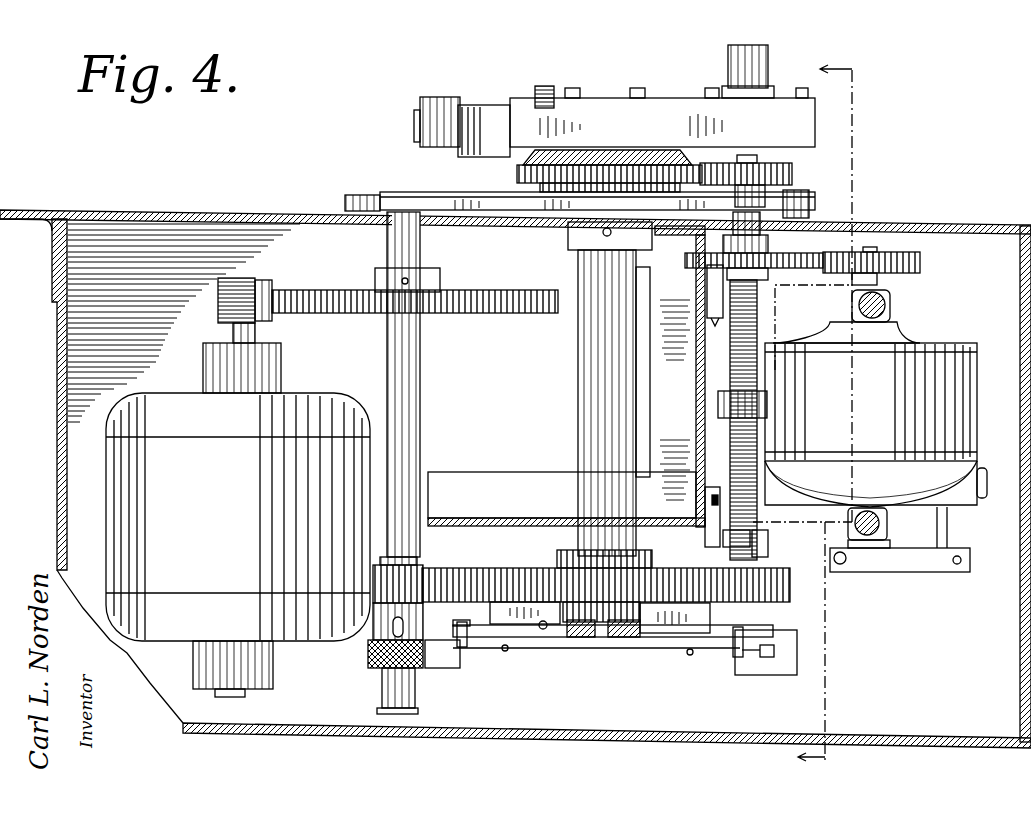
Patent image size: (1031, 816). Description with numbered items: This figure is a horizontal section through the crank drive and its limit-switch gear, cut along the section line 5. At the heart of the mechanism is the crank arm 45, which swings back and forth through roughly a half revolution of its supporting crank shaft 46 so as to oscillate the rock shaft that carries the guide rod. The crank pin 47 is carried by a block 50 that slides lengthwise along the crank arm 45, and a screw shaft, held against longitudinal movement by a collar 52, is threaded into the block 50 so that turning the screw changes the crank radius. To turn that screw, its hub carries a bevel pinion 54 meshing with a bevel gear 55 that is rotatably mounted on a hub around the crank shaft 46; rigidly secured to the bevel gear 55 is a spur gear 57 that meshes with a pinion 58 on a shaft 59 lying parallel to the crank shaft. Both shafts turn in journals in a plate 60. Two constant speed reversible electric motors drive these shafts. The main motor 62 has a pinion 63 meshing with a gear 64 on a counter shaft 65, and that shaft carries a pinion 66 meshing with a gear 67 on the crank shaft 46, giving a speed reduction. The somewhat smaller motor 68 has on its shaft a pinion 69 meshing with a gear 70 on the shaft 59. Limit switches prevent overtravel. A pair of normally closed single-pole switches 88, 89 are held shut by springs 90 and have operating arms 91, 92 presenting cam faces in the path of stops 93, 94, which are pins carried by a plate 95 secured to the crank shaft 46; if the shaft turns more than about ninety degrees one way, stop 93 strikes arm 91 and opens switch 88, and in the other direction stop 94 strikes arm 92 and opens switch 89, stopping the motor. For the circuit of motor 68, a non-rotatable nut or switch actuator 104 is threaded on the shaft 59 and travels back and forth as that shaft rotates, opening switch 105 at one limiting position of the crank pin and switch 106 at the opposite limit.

The section line 5 is at (838, 416).
The crank arm 45 is at (636, 122).
The crank shaft 46 is at (578, 383).
The crank pin 47 is at (755, 45).
The block 50 is at (782, 97).
The collar 52 is at (438, 100).
The bevel pinion 54 is at (546, 86).
The bevel gear 55 is at (610, 150).
The spur gear 57 is at (517, 176).
The pinion 58 is at (792, 176).
The shaft 59 is at (757, 522).
The plate 60 is at (455, 198).
The main motor 62 is at (238, 510).
The pinion 63 is at (270, 290).
The gear 64 is at (348, 290).
The counter shaft 65 is at (420, 390).
The pinion 66 is at (427, 573).
The gear 67 is at (513, 583).
The motor 68 is at (876, 431).
The pinion 69 is at (920, 264).
The gear 70 is at (796, 264).
The switch 88 is at (448, 650).
The switch 89 is at (766, 658).
The spring 90 is at (505, 651).
The operating arm 91 is at (575, 638).
The operating arm 92 is at (657, 648).
The stop 93 is at (460, 640).
The stop 94 is at (780, 630).
The plate 95 is at (545, 630).
The switch actuator 104 is at (718, 408).
The switch 105 is at (714, 490).
The switch 106 is at (716, 320).